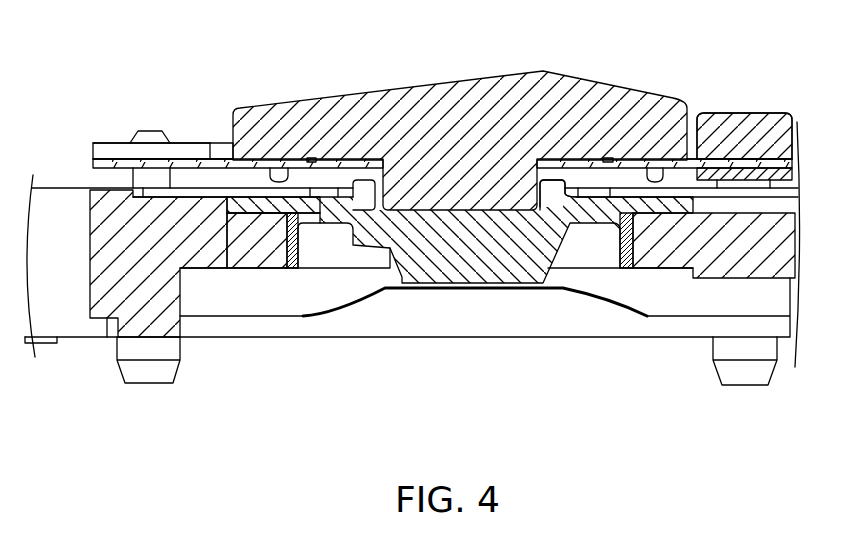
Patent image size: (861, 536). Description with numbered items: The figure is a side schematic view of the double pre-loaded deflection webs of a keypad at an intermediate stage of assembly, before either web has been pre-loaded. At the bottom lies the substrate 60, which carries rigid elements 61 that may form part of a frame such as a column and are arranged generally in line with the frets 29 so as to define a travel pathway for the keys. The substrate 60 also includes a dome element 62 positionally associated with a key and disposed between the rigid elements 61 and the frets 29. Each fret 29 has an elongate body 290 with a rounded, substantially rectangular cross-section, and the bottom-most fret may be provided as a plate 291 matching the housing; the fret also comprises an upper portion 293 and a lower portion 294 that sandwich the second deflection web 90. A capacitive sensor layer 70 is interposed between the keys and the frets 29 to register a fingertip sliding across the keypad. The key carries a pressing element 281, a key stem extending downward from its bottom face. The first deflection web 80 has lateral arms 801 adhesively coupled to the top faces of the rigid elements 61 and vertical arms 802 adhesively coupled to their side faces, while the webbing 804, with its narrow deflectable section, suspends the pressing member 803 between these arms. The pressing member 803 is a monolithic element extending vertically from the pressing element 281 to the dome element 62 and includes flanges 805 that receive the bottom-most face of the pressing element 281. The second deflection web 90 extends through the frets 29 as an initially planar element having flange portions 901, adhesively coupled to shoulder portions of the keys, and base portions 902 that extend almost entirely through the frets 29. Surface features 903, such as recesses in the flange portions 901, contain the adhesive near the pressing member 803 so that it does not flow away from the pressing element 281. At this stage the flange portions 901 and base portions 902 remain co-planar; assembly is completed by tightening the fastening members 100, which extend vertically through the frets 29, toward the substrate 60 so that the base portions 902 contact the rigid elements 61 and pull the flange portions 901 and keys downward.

The fret 29 is at (123, 150).
The substrate 60 is at (275, 328).
The rigid element 61 is at (125, 258).
The dome element 62 is at (388, 292).
The capacitive sensor layer 70 is at (210, 192).
The first deflection web 80 is at (310, 240).
The second deflection web 90 is at (252, 163).
The fastening member 100 is at (150, 372).
The pressing element 281 is at (480, 193).
The elongate body 290 is at (717, 130).
The plate 291 is at (100, 152).
The upper portion 293 is at (753, 137).
The lower portion 294 is at (783, 175).
The lateral arm 801 is at (685, 208).
The vertical arm 802 is at (627, 250).
The pressing member 803 is at (540, 270).
The webbing 804 is at (593, 212).
The flange 805 is at (366, 190).
The flange portion 901 is at (287, 167).
The base portion 902 is at (117, 164).
The surface feature 903 is at (316, 157).